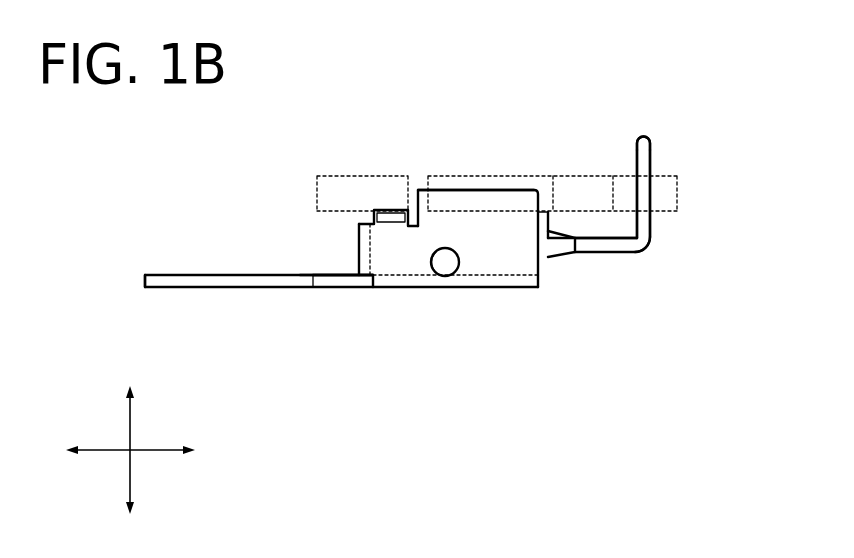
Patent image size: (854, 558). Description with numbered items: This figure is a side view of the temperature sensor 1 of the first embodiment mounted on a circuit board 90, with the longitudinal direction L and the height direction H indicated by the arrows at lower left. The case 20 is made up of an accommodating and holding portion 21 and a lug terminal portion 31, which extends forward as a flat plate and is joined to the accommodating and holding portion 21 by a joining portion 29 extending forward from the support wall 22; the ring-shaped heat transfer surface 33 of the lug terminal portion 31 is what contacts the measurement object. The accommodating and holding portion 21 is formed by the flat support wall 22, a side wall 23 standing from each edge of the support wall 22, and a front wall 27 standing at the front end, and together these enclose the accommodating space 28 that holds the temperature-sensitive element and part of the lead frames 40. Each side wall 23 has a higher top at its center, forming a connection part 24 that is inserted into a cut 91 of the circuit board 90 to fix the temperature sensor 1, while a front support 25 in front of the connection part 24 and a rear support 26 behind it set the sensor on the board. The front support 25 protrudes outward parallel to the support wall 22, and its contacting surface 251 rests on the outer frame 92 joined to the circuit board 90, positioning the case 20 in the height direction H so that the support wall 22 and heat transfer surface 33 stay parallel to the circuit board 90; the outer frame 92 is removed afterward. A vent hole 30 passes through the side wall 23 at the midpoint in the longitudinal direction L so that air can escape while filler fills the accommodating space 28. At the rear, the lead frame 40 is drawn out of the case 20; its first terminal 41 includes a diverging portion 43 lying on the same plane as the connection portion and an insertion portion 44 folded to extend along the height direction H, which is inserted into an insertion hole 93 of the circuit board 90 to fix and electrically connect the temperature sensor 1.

The temperature sensor 1 is at (320, 128).
The case 20 is at (323, 260).
The accommodating and holding portion 21 is at (508, 288).
The support wall 22 is at (450, 288).
The side wall 23 is at (556, 258).
The connection part 24 is at (442, 190).
The front support 25 is at (360, 216).
The contacting surface 251 is at (396, 208).
The rear support 26 is at (553, 228).
The front wall 27 is at (358, 258).
The accommodating space 28 is at (481, 235).
The joining portion 29 is at (333, 288).
The vent hole 30 is at (432, 258).
The lug terminal portion 31 is at (252, 288).
The heat transfer surface 33 is at (172, 288).
The lead frame 40 is at (607, 270).
The first terminal 41 is at (653, 214).
The diverging portion 43 is at (613, 237).
The insertion portion 44 is at (653, 165).
The circuit board 90 is at (488, 177).
The cut 91 is at (528, 188).
The outer frame 92 is at (330, 176).
The insertion hole 93 is at (650, 252).
The height direction H is at (133, 425).
The longitudinal direction L is at (157, 452).